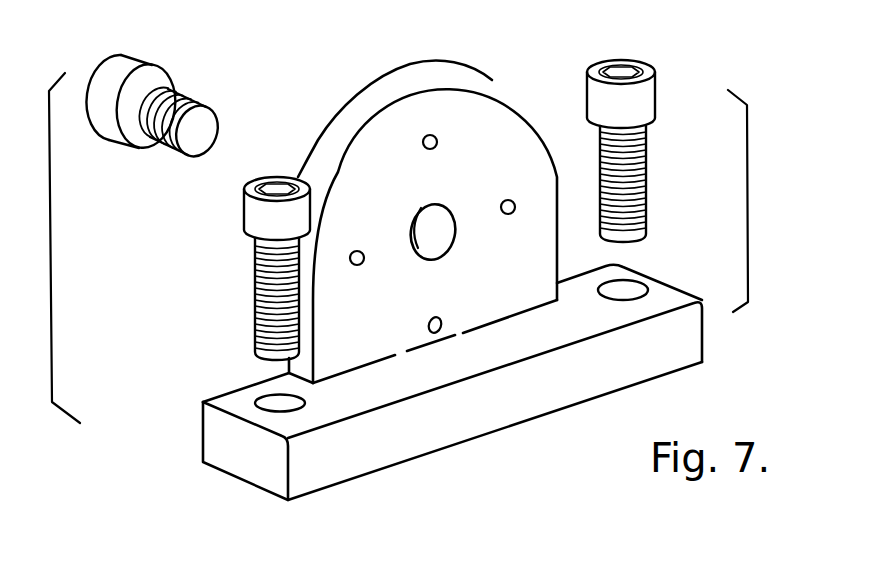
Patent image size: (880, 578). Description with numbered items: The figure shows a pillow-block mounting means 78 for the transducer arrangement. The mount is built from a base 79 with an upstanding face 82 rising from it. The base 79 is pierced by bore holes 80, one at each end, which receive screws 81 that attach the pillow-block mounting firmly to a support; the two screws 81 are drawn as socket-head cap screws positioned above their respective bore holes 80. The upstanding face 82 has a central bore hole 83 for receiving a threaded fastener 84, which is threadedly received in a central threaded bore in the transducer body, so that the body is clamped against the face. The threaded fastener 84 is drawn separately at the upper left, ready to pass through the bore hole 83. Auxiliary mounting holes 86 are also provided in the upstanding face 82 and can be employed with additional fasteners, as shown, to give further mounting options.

The mounting bracket assembly 78 is at (583, 410).
The base 79 is at (687, 348).
The bore holes 80 is at (268, 400).
The screws 81 is at (253, 274).
The upstanding face 82 is at (500, 93).
The bore hole 83 is at (440, 243).
The threaded fastener 84 is at (222, 100).
The auxiliary mounting holes 86 is at (503, 198).